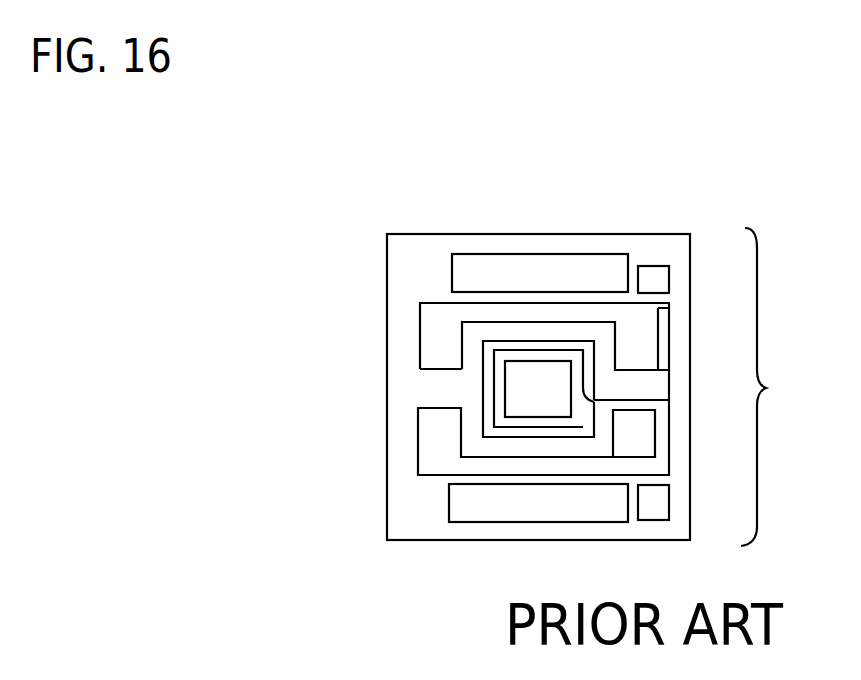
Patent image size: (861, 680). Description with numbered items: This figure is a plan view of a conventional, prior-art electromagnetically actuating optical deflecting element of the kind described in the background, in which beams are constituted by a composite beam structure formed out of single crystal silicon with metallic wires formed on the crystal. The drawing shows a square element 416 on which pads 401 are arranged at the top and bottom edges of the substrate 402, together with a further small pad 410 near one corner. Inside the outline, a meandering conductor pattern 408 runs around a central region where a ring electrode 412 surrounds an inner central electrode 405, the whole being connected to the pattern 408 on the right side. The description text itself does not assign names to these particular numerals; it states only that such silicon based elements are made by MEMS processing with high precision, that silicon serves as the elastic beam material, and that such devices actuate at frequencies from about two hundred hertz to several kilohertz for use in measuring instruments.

The electrode pad 401 is at (587, 253).
The substrate 402 is at (386, 503).
The center electrode 405 is at (527, 358).
The wiring pattern 408 is at (443, 367).
The pad 410 is at (658, 264).
The ring electrode 412 is at (548, 340).
The semiconductor device 416 is at (785, 387).